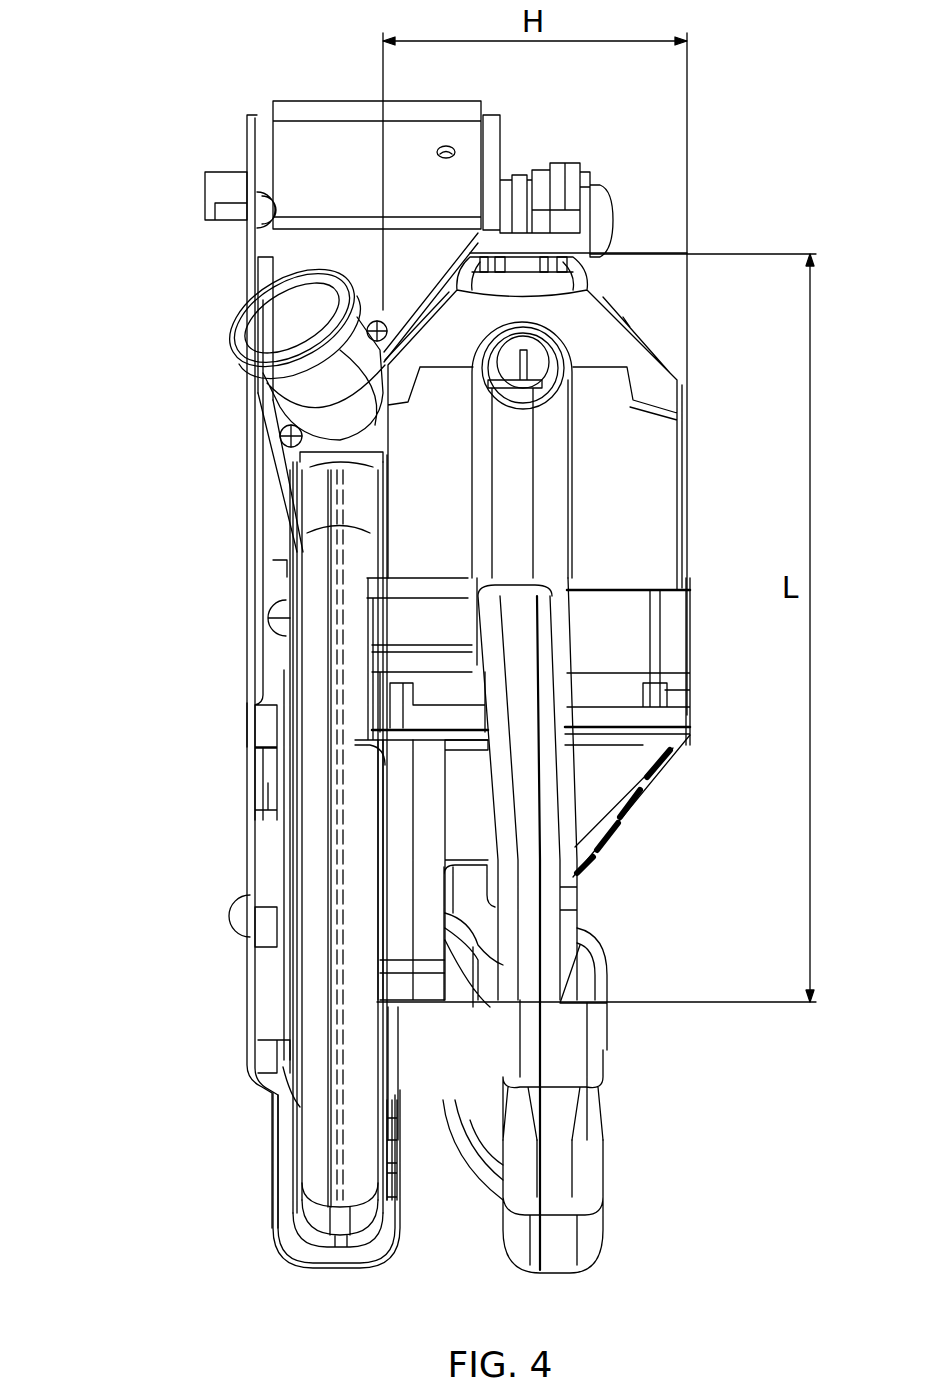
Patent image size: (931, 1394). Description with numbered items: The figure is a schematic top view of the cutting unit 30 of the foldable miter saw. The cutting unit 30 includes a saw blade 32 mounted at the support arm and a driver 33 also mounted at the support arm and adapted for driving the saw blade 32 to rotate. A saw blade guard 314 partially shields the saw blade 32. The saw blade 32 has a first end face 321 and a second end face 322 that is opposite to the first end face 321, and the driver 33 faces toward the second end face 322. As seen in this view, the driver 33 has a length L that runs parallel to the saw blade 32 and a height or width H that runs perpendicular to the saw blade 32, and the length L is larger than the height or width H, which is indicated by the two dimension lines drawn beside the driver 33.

The cutting unit 30 is at (304, 546).
The saw blade guard 314 is at (322, 680).
The saw blade 32 is at (337, 973).
The first end face 321 is at (337, 1047).
The second end face 322 is at (340, 1120).
The driver 33 is at (638, 520).